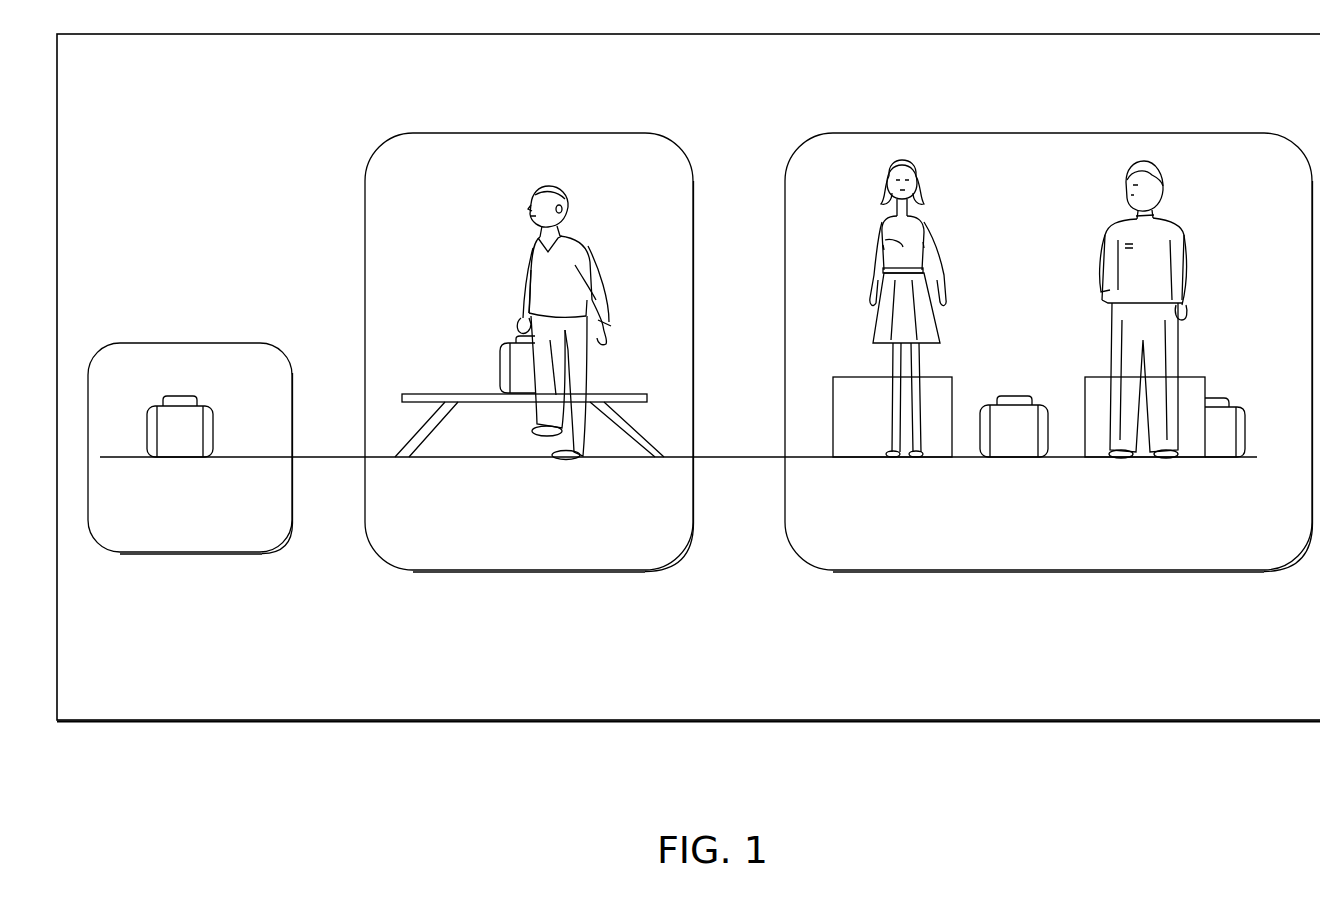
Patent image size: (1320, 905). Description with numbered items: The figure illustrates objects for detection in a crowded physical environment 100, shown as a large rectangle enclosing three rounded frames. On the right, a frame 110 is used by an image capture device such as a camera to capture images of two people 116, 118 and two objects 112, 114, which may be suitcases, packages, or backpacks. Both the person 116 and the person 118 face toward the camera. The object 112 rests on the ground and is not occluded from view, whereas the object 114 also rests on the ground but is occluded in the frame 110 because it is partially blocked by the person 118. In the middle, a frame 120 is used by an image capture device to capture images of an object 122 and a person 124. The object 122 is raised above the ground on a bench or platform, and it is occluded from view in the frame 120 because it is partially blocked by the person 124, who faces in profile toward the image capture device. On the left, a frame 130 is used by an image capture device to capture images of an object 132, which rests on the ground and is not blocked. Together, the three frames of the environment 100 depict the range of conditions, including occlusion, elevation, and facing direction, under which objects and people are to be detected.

The physical environment 100 is at (683, 700).
The frame 110 is at (1021, 540).
The object 112 is at (1008, 462).
The object 114 is at (1252, 426).
The person 116 is at (940, 215).
The person 118 is at (1172, 216).
The frame 120 is at (501, 541).
The object 122 is at (494, 360).
The person 124 is at (522, 213).
The frame 130 is at (166, 519).
The object 132 is at (179, 388).